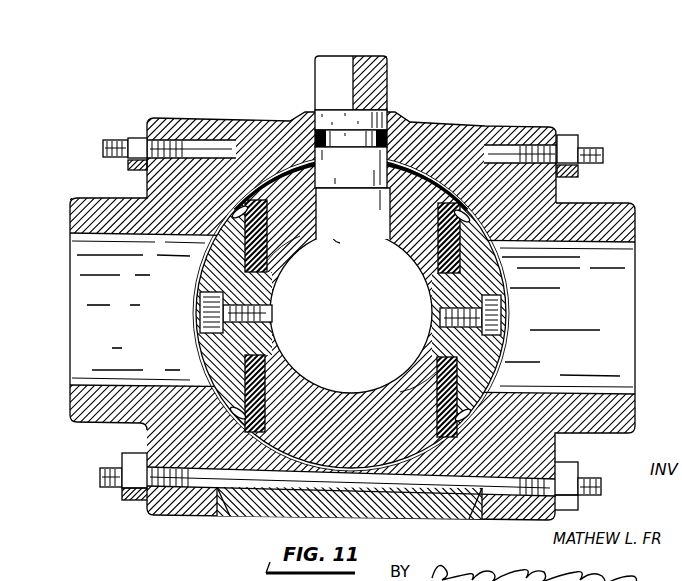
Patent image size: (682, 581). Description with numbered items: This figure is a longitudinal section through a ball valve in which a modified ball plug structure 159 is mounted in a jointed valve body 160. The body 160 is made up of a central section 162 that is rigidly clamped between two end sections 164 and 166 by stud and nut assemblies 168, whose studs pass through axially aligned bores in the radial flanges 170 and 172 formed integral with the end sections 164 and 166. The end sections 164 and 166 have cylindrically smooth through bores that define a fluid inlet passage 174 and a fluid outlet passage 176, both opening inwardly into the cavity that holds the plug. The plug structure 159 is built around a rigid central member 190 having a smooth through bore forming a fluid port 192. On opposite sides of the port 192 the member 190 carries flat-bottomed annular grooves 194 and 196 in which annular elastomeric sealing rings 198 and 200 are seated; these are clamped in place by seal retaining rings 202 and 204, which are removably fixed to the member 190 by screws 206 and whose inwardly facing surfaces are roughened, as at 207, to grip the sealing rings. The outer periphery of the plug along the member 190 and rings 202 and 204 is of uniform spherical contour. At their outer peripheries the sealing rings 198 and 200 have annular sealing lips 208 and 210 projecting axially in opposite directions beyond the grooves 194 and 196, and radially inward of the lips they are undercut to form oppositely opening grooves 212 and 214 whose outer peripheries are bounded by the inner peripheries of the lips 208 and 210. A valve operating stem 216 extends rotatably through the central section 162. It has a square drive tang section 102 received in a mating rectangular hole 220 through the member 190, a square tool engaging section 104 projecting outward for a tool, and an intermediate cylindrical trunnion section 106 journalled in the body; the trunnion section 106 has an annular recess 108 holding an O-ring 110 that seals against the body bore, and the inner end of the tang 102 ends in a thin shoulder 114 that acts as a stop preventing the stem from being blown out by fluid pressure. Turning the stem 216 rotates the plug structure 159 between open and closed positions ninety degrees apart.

The drive tang section 102 is at (386, 228).
The tool engaging section 104 is at (320, 68).
The trunnion section 106 is at (379, 120).
The annular outwardly opening recess 108 is at (352, 143).
The O-ring 110 is at (384, 140).
The shoulder 114 is at (336, 243).
The ball plug structure 159 is at (500, 368).
The jointed valve body 160 is at (228, 524).
The central section 162 is at (465, 523).
The end section 164 is at (80, 430).
The end section 166 is at (617, 433).
The stud and nut assemblies 168 is at (128, 138).
The radial flange 170 is at (193, 118).
The radial flange 172 is at (522, 125).
The fluid inlet passage 174 is at (79, 390).
The fluid outlet passage 176 is at (623, 242).
The rigid central member 190 is at (398, 474).
The fluid port 192 is at (291, 368).
The annular groove 194 is at (262, 221).
The annular groove 196 is at (457, 199).
The sealing ring 198 is at (306, 229).
The sealing ring 200 is at (397, 236).
The seal retaining ring 202 is at (200, 280).
The seal retaining ring 204 is at (504, 290).
The screws 206 is at (200, 312).
The roughened surface 207 is at (264, 258).
The annular sealing lip 208 is at (236, 208).
The annular sealing lip 210 is at (458, 216).
The groove 212 is at (235, 209).
The groove 214 is at (456, 222).
The valve operating stem 216 is at (341, 290).
The rectangular hole 220 is at (312, 206).